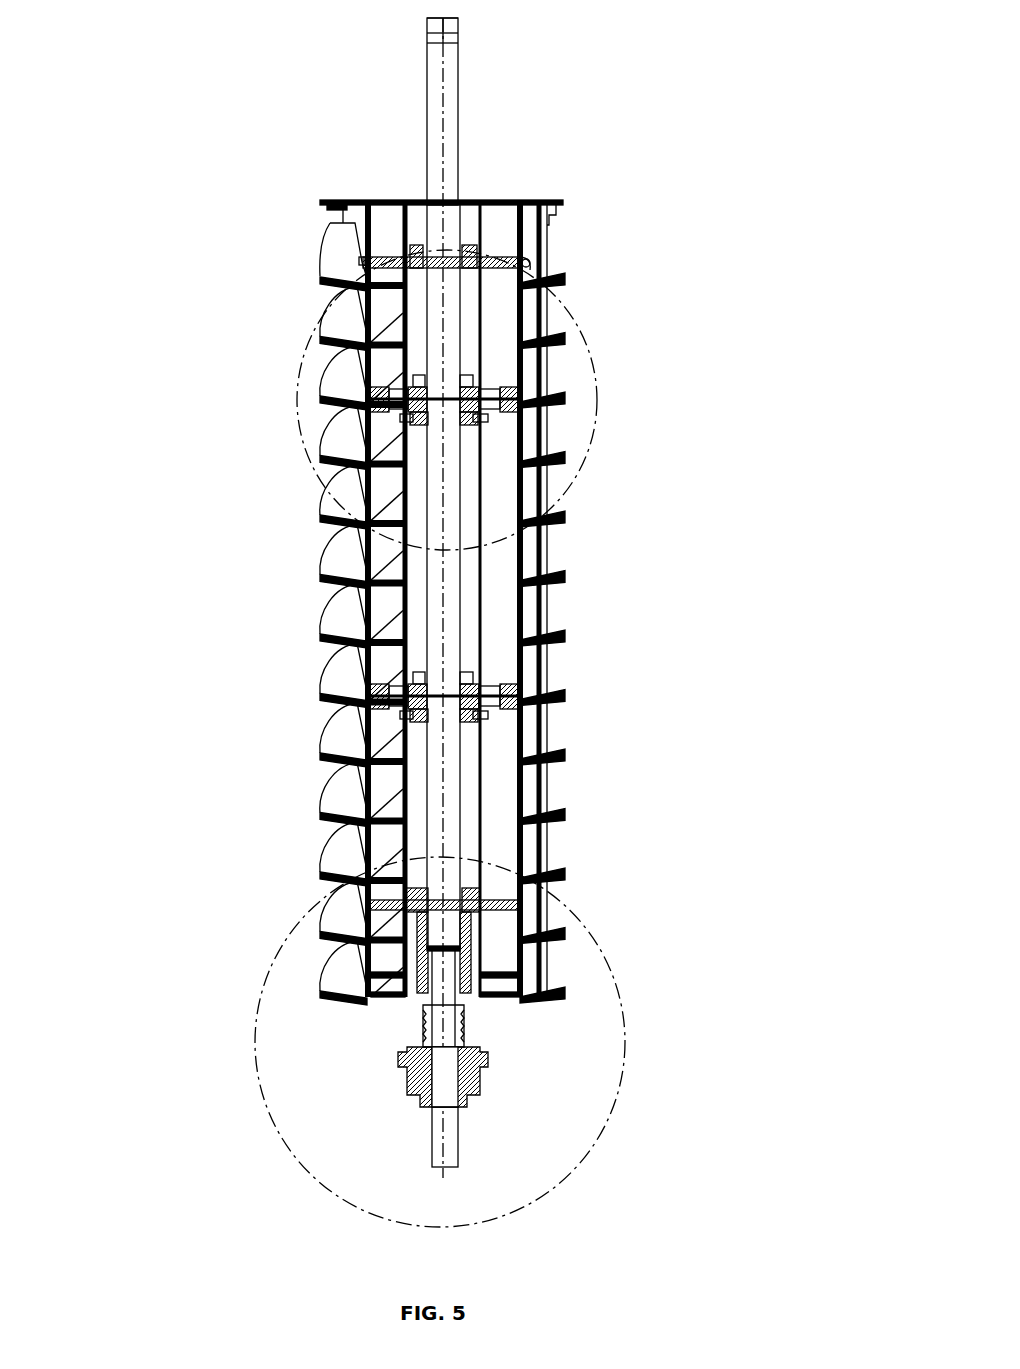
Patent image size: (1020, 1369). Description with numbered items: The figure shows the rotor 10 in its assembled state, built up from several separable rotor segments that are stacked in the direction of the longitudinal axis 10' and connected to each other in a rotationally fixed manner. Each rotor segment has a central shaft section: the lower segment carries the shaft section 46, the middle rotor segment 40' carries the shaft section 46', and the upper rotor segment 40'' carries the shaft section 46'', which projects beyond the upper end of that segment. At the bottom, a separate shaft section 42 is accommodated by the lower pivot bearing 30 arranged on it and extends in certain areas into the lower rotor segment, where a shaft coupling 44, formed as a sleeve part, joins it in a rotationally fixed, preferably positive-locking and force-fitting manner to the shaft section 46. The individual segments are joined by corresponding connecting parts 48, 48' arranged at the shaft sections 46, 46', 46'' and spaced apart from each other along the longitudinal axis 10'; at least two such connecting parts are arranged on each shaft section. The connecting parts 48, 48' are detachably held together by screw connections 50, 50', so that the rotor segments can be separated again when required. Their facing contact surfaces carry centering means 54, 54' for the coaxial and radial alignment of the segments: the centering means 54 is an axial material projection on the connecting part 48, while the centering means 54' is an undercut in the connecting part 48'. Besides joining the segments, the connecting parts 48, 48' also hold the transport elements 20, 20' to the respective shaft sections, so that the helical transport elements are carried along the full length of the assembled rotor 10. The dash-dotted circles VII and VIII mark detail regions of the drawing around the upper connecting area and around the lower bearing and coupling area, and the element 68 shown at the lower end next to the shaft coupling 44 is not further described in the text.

The rotor 10 is at (346, 598).
The longitudinal axis 10' is at (417, 51).
The transport element 20 is at (338, 641).
The transport element 20' is at (315, 264).
The lower pivot bearing 30 is at (470, 1078).
The rotor segment 40' is at (590, 668).
The upper rotor segment 40'' is at (587, 262).
The shaft section 42 is at (440, 1118).
The shaft coupling 44 is at (422, 980).
The shaft section 46 is at (330, 601).
The shaft section 46' is at (362, 578).
The shaft section 46'' is at (477, 111).
The connecting part 48 is at (501, 584).
The connecting part 48' is at (509, 532).
The screw connection 50 is at (319, 678).
The screw connection 50' is at (573, 464).
The centering means 54 is at (314, 465).
The centering means 54' is at (393, 321).
The gland nut 68 is at (445, 976).
The detail view VII is at (597, 370).
The detail view VIII is at (625, 1002).